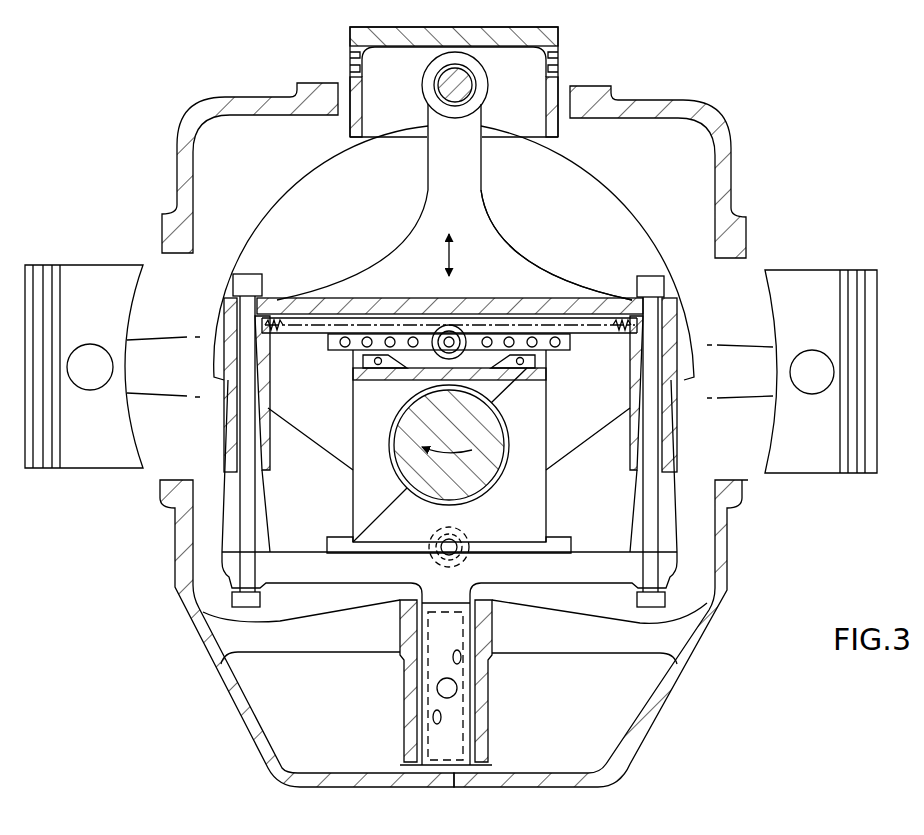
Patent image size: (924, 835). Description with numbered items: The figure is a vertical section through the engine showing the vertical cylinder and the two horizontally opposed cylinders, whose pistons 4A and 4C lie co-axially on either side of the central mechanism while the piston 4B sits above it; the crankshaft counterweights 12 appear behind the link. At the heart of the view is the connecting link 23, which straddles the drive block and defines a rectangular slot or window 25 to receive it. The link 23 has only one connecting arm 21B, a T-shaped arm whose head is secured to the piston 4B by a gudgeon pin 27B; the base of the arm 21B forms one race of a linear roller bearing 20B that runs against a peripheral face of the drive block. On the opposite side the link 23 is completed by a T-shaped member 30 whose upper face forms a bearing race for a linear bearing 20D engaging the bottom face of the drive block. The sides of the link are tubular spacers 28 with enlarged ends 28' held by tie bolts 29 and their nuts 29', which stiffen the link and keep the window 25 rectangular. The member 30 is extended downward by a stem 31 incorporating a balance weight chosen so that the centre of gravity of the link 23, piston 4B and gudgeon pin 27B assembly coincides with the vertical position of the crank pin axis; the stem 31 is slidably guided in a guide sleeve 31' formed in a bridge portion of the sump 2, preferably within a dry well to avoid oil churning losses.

The sump 2 is at (232, 693).
The counterweights 12 is at (454, 231).
The piston 4A is at (115, 447).
The piston 4B is at (350, 83).
The piston 4C is at (822, 453).
The gudgeon pin 27B is at (470, 82).
The connecting arm 21B is at (447, 192).
The connecting link 23 is at (521, 265).
The linear roller bearing 20B is at (345, 346).
The linear bearing 20D is at (322, 540).
The slot or window 25 is at (498, 447).
The spacers 28 is at (703, 387).
The enlarged ends 28' is at (501, 572).
The tie bolts 29 is at (683, 393).
The nuts 29' is at (687, 434).
The T-shaped member 30 is at (327, 573).
The stem 31 is at (390, 681).
The guide sleeve 31' is at (493, 681).